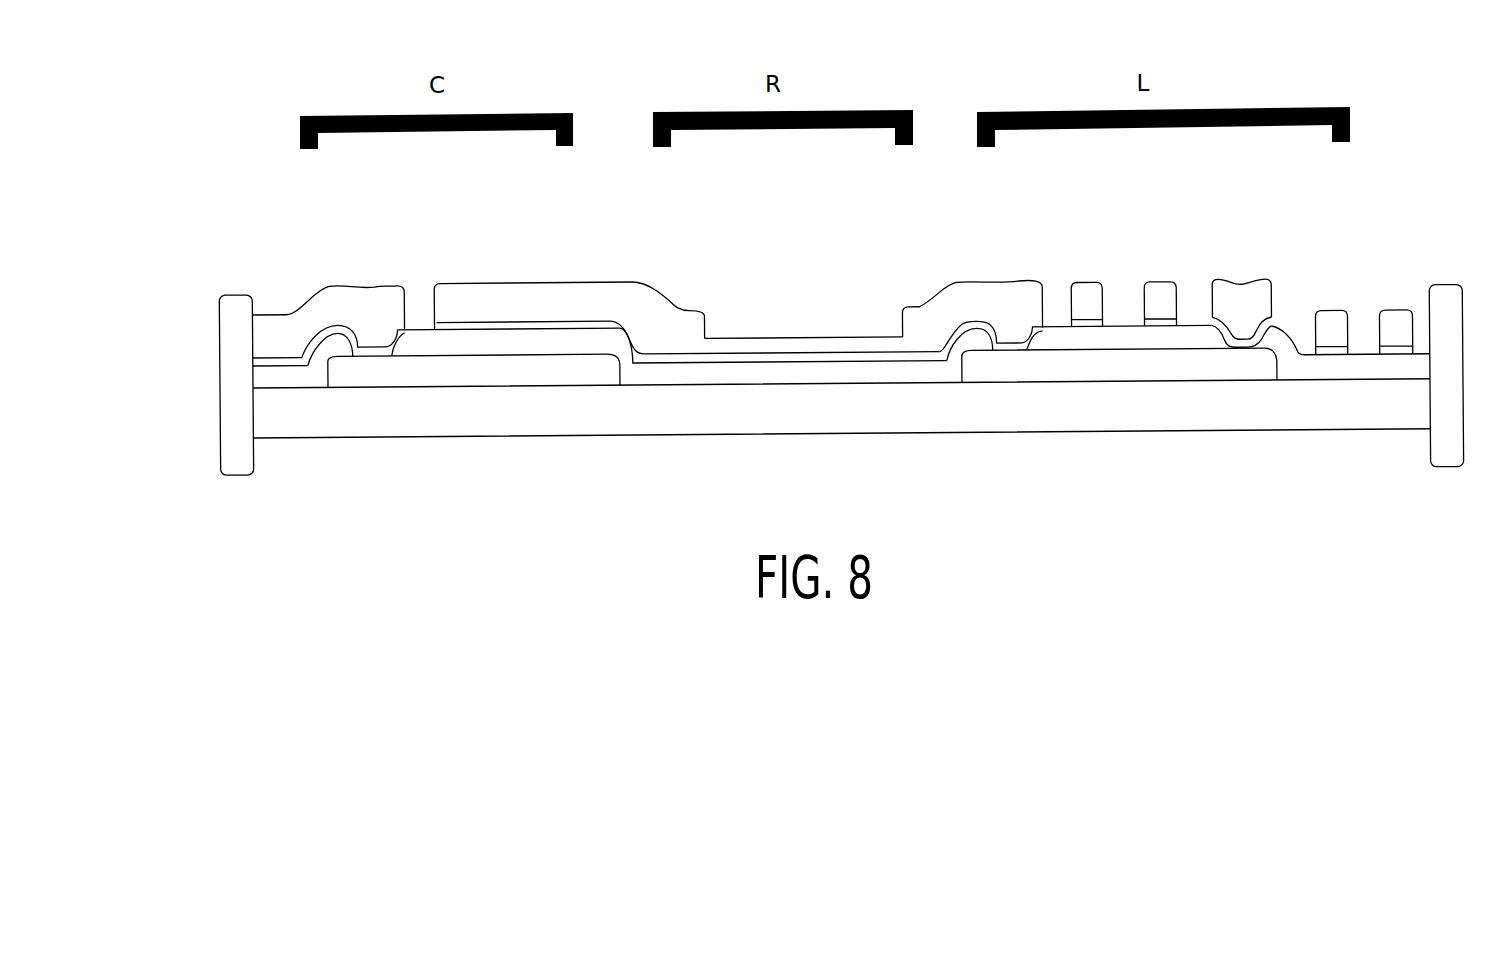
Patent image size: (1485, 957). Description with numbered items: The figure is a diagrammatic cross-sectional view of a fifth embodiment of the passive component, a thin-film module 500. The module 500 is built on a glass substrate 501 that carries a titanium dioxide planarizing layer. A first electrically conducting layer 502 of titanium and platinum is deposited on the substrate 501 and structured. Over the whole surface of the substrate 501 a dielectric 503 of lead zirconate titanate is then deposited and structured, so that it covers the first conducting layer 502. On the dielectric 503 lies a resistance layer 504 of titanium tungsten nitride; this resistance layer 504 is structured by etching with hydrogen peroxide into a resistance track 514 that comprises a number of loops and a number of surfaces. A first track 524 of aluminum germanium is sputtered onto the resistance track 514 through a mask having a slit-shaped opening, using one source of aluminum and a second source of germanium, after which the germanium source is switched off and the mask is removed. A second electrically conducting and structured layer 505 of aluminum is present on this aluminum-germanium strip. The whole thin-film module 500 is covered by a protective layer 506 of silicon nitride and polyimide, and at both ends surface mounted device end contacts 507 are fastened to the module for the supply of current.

The thin-film module 500 is at (220, 269).
The glass substrate 501 is at (522, 420).
The first electrically conducting layer 502 is at (403, 379).
The dielectric 503 is at (300, 378).
The resistance layer 504 is at (336, 327).
The second electrically conducting and structured layer 505 is at (377, 313).
The protective layer 506 is at (972, 314).
The surface mounted device end contacts 507 is at (240, 470).
The resistance track 514 is at (755, 357).
The first track 524 is at (835, 357).